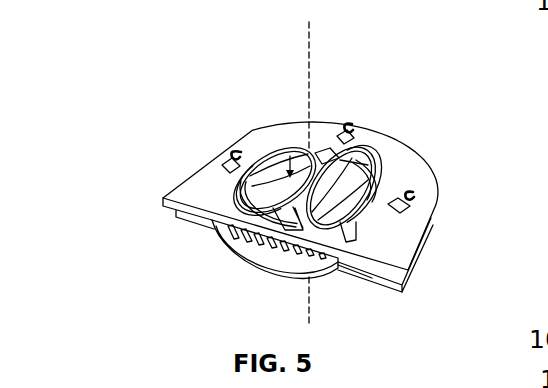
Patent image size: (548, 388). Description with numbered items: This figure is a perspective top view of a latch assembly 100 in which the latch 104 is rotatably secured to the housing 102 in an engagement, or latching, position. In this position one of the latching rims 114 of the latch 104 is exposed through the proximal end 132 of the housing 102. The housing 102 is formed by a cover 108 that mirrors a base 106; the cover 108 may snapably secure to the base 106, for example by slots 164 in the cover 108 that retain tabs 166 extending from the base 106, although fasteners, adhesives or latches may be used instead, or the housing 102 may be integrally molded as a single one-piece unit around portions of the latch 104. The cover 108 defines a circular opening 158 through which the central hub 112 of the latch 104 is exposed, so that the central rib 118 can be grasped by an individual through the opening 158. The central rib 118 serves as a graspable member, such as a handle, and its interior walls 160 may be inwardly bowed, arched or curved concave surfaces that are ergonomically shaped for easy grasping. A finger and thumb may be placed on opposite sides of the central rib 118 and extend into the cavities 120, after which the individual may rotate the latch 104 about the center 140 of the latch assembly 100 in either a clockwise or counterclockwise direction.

The latch assembly 100 is at (145, 58).
The housing 102 is at (436, 158).
The latch 104 is at (285, 158).
The base 106 is at (412, 276).
The cover 108 is at (395, 155).
The central hub 112 is at (288, 154).
The latching rim 114 is at (255, 263).
The central rib 118 is at (425, 178).
The cavities 120 is at (243, 152).
The proximal end 132 is at (345, 274).
The center 140 is at (314, 43).
The circular opening 158 is at (321, 150).
The interior walls 160 is at (245, 190).
The slots 164 is at (229, 165).
The tabs 166 is at (236, 156).